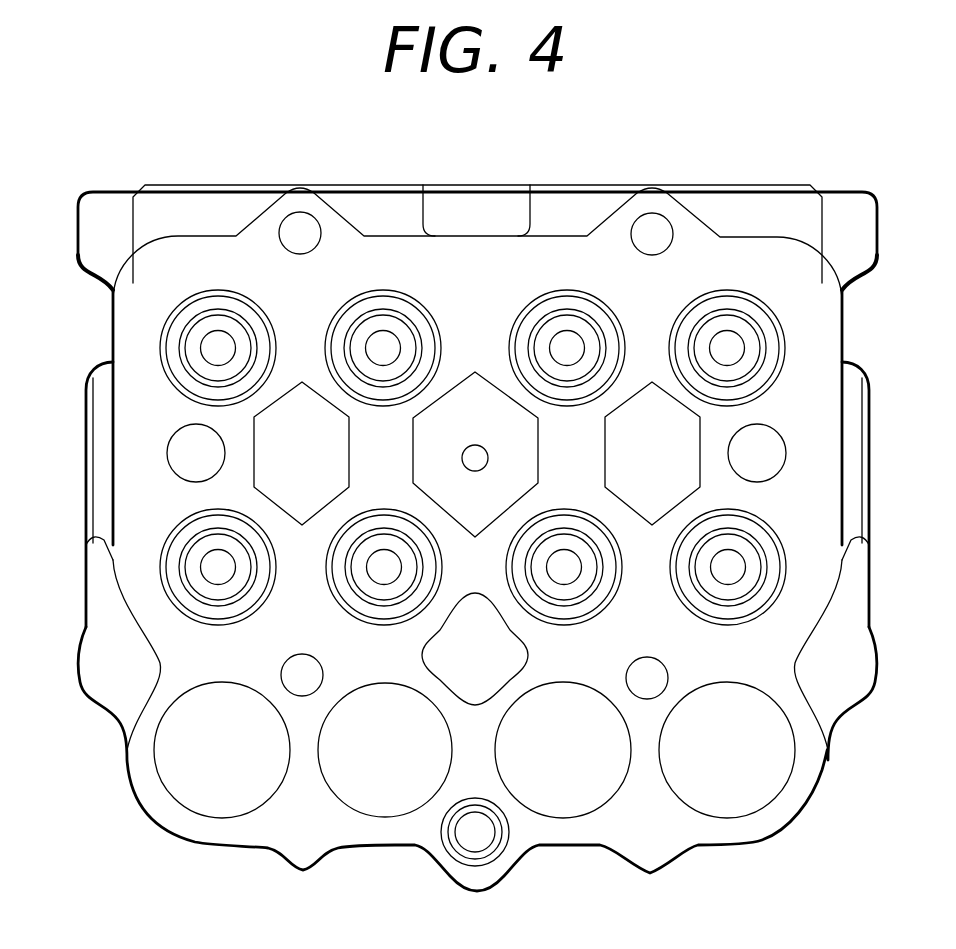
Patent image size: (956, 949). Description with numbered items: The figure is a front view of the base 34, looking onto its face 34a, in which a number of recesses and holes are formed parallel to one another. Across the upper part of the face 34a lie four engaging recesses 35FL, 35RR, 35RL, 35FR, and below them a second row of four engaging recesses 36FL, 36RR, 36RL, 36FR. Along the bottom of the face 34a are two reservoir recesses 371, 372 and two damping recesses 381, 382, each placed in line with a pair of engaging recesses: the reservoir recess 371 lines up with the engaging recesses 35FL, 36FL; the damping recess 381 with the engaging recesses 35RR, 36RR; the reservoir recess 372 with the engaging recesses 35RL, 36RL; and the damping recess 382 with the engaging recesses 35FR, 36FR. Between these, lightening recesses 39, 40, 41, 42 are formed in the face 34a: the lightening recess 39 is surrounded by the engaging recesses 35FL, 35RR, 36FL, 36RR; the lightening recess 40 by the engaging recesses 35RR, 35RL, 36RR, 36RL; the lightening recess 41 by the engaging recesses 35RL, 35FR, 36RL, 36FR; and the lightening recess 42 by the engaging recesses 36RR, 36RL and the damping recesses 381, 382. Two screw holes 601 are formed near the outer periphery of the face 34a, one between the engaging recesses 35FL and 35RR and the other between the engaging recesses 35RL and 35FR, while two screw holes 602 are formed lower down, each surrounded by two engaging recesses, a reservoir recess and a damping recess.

The base 34 is at (115, 700).
The face of the base 34a is at (485, 250).
The screw holes 601 is at (298, 222).
The screw holes 602 is at (690, 727).
The engaging recess 35FL is at (163, 335).
The engaging recess 35RR is at (352, 306).
The engaging recess 35RL is at (575, 302).
The engaging recess 35FR is at (733, 302).
The engaging recess 36FL is at (200, 606).
The engaging recess 36RR is at (368, 608).
The engaging recess 36RL is at (567, 610).
The engaging recess 36FR is at (724, 612).
The lightening recess 39 is at (258, 470).
The lightening recess 40 is at (412, 452).
The lightening recess 41 is at (692, 440).
The lightening recess 42 is at (508, 680).
The reservoir recess 371 is at (210, 812).
The damping recess 381 is at (387, 815).
The reservoir recess 372 is at (565, 812).
The damping recess 382 is at (727, 812).